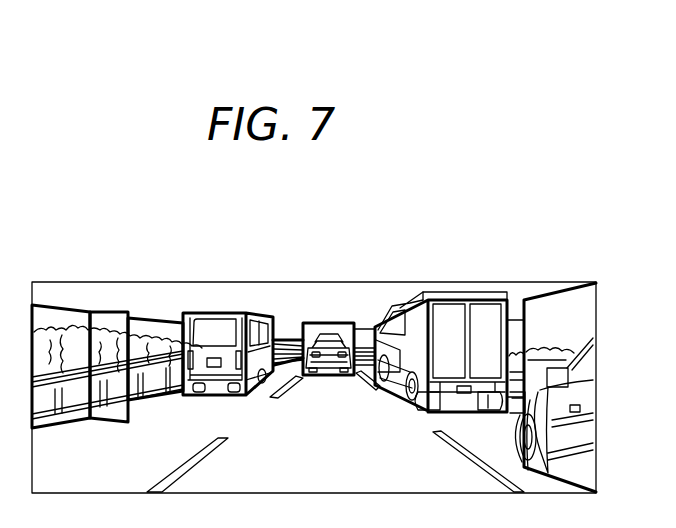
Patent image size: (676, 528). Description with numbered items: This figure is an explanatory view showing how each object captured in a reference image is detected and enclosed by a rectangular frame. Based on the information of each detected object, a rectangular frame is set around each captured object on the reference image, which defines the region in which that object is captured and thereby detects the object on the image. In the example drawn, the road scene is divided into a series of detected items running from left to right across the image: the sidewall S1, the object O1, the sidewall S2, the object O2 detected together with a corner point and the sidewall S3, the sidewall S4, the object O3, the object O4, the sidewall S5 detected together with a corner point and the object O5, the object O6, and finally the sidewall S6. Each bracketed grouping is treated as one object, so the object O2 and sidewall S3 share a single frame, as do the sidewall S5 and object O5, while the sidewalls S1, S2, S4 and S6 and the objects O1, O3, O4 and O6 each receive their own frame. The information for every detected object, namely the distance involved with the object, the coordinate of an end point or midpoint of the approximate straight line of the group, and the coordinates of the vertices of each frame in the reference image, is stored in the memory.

The sidewall S1 is at (68, 300).
The object O1 is at (111, 300).
The sidewall S2 is at (160, 300).
The object O2 is at (209, 300).
The sidewall S3 is at (268, 300).
The sidewall S4 is at (292, 330).
The object O3 is at (333, 300).
The object O4 is at (366, 300).
The sidewall S5 is at (408, 300).
The object O5 is at (457, 300).
The object O6 is at (516, 300).
The sidewall S6 is at (563, 300).